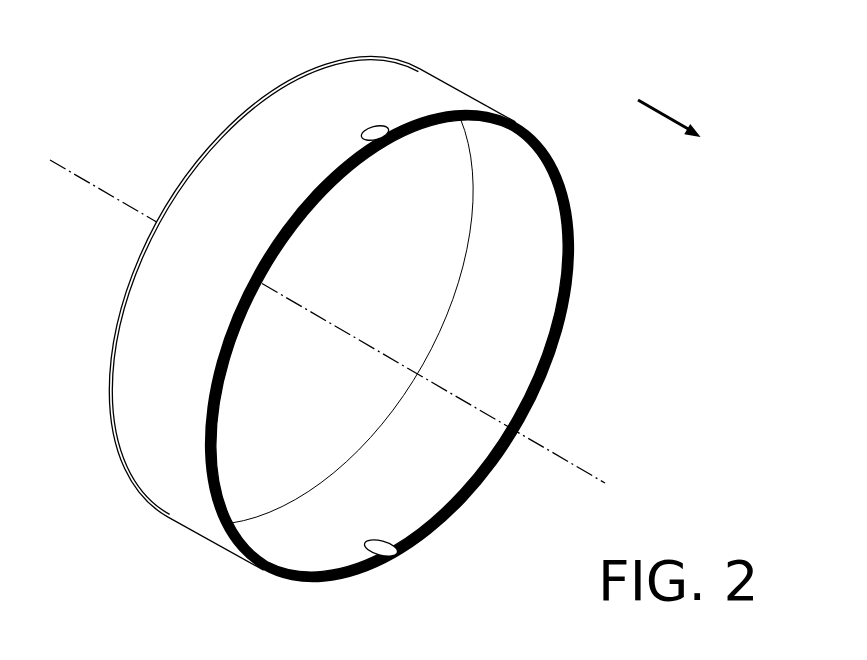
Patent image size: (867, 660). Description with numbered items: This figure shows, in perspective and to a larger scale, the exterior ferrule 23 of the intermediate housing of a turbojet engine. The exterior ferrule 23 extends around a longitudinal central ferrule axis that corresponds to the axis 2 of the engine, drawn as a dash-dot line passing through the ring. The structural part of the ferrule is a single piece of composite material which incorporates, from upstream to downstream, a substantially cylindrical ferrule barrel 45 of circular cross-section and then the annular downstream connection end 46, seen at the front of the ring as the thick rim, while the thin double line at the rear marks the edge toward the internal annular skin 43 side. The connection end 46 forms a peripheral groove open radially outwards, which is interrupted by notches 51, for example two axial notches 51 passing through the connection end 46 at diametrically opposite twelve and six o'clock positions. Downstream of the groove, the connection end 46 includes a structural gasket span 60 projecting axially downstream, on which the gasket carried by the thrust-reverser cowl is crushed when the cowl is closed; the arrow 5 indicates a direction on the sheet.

The axis 2 is at (568, 458).
The insertion direction 5 is at (666, 108).
The exterior ferrule 23 is at (493, 83).
The internal annular skin 43 is at (282, 90).
The ferrule barrel 45 is at (392, 90).
The annular downstream connection end 46 is at (548, 144).
The notches 51 is at (390, 140).
The structural gasket span 60 is at (462, 500).